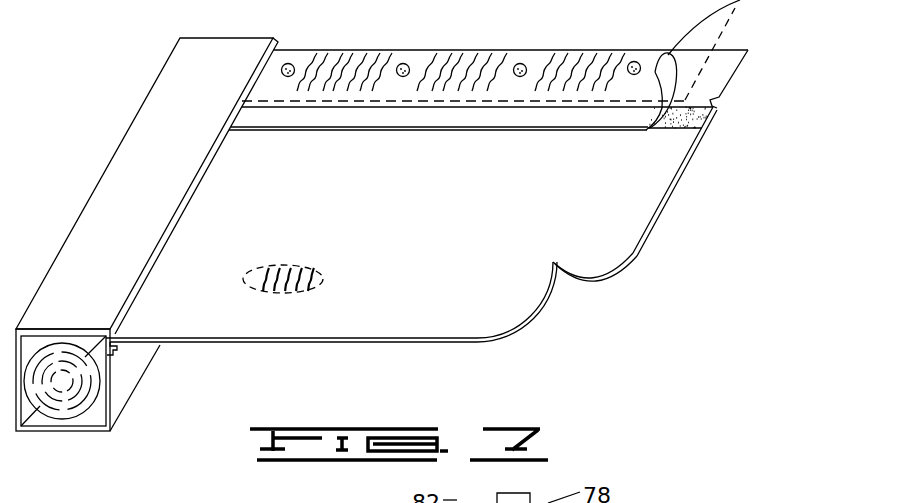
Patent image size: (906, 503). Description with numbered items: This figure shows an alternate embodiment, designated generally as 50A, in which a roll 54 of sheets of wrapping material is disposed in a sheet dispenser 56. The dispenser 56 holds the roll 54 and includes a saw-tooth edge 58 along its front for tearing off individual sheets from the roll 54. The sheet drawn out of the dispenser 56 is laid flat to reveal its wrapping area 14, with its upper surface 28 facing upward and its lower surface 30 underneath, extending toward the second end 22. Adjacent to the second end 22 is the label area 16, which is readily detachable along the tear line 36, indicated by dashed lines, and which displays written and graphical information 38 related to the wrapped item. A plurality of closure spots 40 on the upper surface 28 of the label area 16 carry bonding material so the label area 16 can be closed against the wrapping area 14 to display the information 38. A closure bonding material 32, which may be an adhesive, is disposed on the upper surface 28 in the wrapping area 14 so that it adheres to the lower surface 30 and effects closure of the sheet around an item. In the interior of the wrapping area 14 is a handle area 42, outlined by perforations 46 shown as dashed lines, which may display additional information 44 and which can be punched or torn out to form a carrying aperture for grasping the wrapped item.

The roll of sheets in a sheet dispenser 50A is at (148, 60).
The sheet dispenser 56 is at (140, 148).
The roll 54 is at (62, 383).
The saw-tooth edge 58 is at (113, 350).
The wrapping area 14 is at (633, 173).
The lower surface 30 is at (567, 290).
The upper surface 28 is at (613, 227).
The second end 22 is at (677, 185).
The label area 16 is at (717, 78).
The tear line 36 is at (733, 22).
The closure bonding material 32 is at (716, 110).
The closure spots 40 is at (288, 62).
The information 38 is at (332, 72).
The handle area 42 is at (250, 283).
The perforations 46 is at (322, 280).
The additional information 44 is at (278, 285).